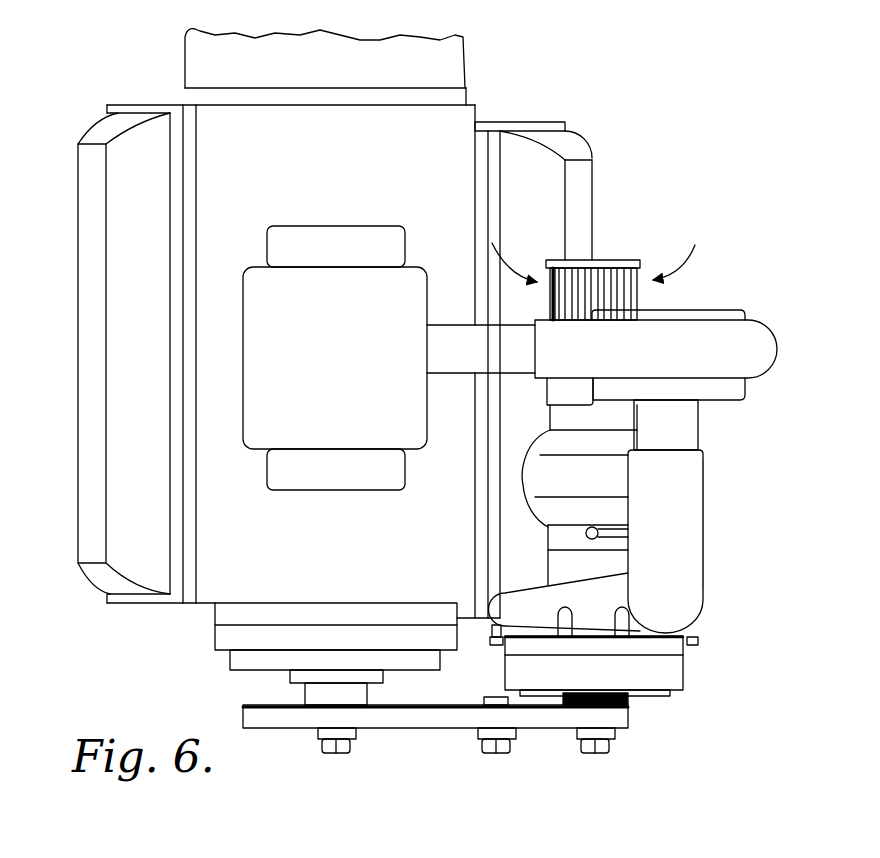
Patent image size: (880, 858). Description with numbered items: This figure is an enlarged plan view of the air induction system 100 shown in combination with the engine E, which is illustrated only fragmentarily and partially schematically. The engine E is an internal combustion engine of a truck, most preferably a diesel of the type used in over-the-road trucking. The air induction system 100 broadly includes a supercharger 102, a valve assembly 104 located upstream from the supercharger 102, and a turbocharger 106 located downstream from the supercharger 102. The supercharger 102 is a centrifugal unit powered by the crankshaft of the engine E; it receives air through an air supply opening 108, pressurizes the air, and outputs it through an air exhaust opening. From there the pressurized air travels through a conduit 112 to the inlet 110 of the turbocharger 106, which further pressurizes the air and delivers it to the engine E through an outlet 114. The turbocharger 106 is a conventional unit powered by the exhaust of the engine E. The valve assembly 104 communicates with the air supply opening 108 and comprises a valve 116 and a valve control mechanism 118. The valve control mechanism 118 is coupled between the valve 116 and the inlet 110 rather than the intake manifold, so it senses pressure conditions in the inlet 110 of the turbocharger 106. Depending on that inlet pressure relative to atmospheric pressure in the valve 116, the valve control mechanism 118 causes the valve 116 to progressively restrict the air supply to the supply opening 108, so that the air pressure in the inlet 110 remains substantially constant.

The engine E is at (92, 128).
The air induction system 100 is at (712, 475).
The supercharger 102 is at (600, 617).
The valve assembly 104 is at (535, 508).
The turbocharger 106 is at (714, 325).
The air supply opening 108 is at (558, 572).
The inlet 110 is at (690, 432).
The conduit 112 is at (685, 572).
The outlet 114 is at (458, 333).
The valve 116 is at (548, 473).
The valve control mechanism 118 is at (620, 527).